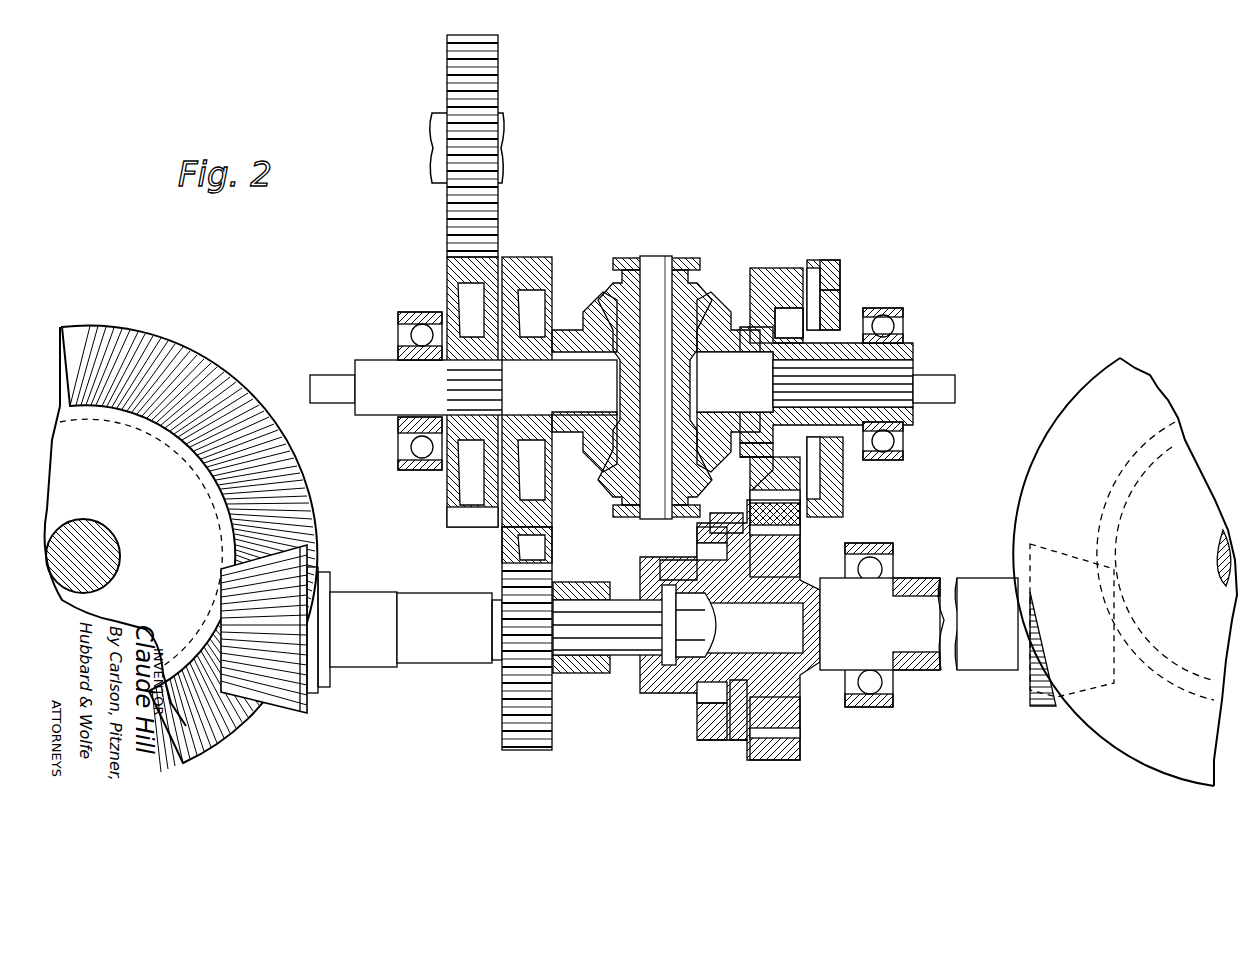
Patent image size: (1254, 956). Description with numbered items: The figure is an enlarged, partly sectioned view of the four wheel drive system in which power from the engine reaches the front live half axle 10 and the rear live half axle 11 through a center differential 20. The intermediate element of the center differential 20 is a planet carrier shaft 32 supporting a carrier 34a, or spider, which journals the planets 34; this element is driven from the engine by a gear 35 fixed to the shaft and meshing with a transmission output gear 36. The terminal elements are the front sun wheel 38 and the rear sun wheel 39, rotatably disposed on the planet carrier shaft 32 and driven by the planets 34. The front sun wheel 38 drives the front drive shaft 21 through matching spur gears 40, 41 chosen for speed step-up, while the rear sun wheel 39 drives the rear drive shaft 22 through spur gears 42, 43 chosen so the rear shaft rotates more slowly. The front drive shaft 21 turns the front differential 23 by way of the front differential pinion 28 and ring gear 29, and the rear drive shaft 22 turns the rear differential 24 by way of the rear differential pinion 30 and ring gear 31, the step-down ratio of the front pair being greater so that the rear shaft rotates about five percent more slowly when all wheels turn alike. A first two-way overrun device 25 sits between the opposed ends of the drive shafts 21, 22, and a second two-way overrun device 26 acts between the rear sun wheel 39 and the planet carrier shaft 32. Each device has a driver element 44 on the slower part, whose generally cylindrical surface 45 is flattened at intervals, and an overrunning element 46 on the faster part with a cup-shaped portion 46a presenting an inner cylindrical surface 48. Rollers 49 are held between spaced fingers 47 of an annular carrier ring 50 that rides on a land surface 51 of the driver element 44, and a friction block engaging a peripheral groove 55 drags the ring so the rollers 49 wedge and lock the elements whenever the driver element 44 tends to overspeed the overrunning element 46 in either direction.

The front live half axle 10 is at (112, 540).
The rear live half axle 11 is at (1214, 540).
The center differential 20 is at (627, 254).
The front drive shaft 21 is at (392, 600).
The rear drive shaft 22 is at (960, 578).
The front differential 23 is at (122, 428).
The rear differential 24 is at (1172, 447).
The first two-way overrun device 25 is at (704, 752).
The second two-way overrun device 26 is at (805, 262).
The front differential pinion 28 is at (290, 712).
The front differential ring gear 29 is at (258, 408).
The rear differential pinion 30 is at (1040, 700).
The rear differential ring gear 31 is at (1040, 457).
The planet carrier shaft 32 is at (378, 368).
The planet 34 is at (700, 292).
The carrier 34a is at (656, 268).
The gear 35 is at (450, 512).
The transmission output gear 36 is at (487, 107).
The front sun wheel 38 is at (598, 312).
The rear sun wheel 39 is at (720, 312).
The front spur gear 40 is at (552, 505).
The front spur gear 41 is at (502, 569).
The rear spur gear 42 is at (752, 470).
The rear spur gear 43 is at (792, 536).
The driver element 44 is at (850, 445).
The cylindrical surface 45 is at (768, 355).
The overrunning element 46 is at (790, 300).
The cup-shaped portion 46a is at (702, 742).
The fingers 47 is at (765, 497).
The inner cylindrical surface 48 is at (812, 458).
The rollers 49 is at (812, 312).
The carrier ring 50 is at (838, 290).
The land surface 51 is at (796, 372).
The peripheral groove 55 is at (832, 264).